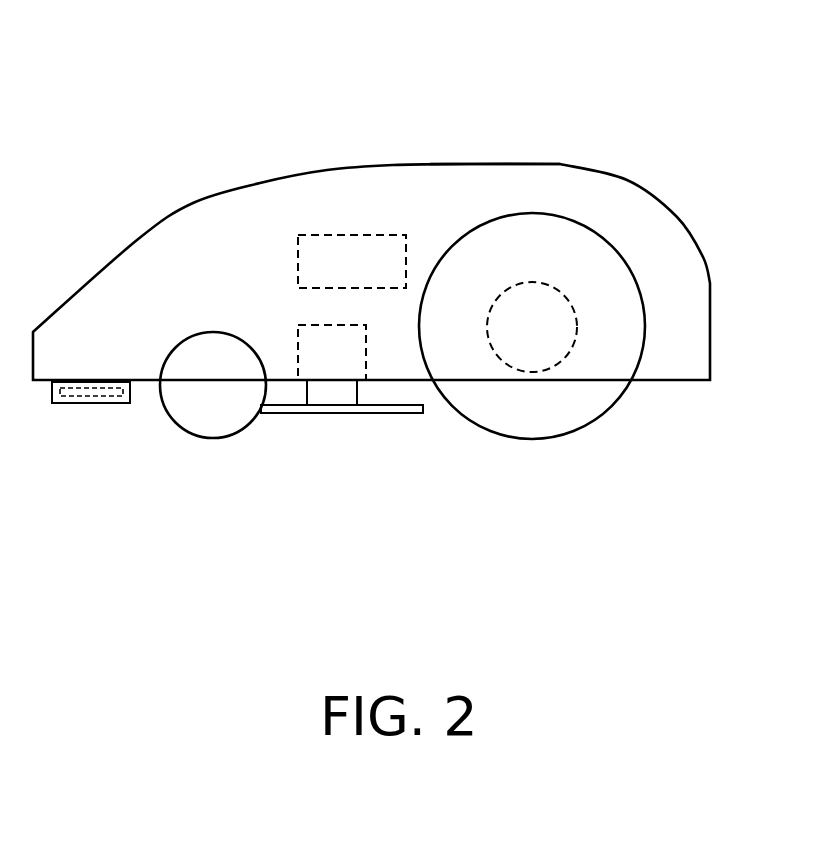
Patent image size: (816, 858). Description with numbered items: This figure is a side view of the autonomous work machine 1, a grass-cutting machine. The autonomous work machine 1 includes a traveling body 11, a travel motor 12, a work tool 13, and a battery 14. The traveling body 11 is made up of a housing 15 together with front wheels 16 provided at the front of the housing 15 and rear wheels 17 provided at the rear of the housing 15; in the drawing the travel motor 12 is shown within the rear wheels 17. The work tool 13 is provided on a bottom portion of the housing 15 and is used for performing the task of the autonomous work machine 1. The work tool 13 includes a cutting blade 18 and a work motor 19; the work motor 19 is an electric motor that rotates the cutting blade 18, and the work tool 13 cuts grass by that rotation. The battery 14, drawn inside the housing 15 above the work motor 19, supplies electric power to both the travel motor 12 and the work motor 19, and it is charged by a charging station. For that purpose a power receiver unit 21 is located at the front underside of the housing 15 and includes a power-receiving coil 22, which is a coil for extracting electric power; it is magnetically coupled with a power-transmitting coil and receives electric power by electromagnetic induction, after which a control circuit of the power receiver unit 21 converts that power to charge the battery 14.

The autonomous work machine 1 is at (186, 98).
The traveling body 11 is at (138, 216).
The travel motor 12 is at (542, 283).
The work tool 13 is at (360, 428).
The battery 14 is at (375, 235).
The housing 15 is at (508, 176).
The front wheels 16 is at (212, 420).
The rear wheels 17 is at (530, 413).
The cutting blade 18 is at (323, 415).
The work motor 19 is at (333, 325).
The power receiver unit 21 is at (63, 404).
The power-receiving coil 22 is at (100, 397).